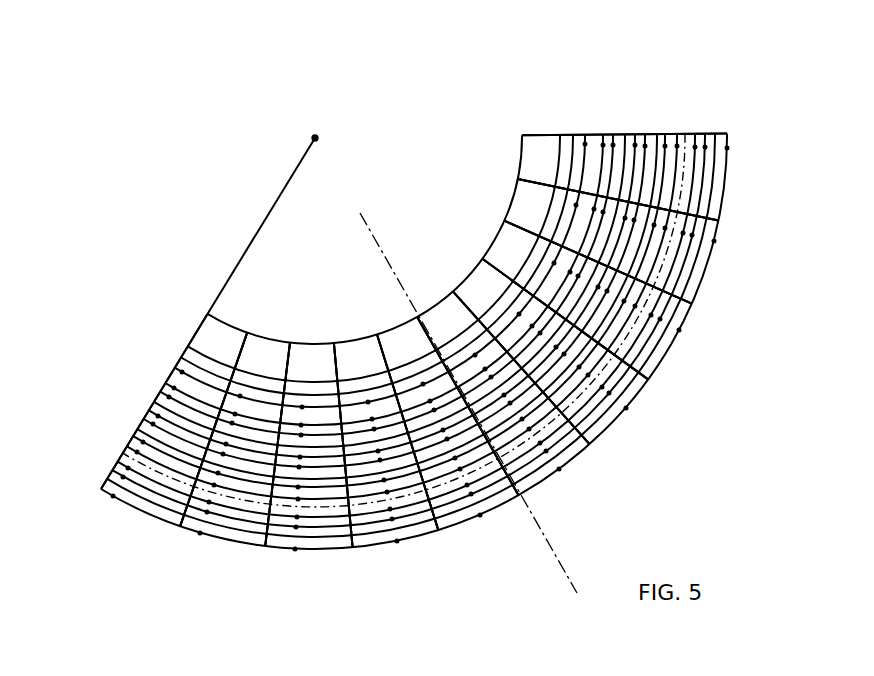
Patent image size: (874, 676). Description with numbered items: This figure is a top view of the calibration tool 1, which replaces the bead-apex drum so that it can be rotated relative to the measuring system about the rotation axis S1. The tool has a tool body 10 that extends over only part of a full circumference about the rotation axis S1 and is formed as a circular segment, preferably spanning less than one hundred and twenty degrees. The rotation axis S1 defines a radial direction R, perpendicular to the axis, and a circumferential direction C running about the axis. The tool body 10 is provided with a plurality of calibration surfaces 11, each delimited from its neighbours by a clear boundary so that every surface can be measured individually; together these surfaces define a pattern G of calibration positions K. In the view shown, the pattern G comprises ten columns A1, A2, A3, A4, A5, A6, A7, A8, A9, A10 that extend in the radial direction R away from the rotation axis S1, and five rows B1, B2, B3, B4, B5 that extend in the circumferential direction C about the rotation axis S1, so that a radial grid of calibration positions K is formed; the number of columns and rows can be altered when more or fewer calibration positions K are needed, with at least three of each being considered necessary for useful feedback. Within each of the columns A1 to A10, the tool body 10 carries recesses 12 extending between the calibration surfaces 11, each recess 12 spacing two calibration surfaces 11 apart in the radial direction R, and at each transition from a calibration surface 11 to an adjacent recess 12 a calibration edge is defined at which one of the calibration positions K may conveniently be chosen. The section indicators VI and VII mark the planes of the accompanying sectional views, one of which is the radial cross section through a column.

The calibration tool 1 is at (214, 161).
The tool body 10 is at (260, 248).
The calibration surfaces 11 is at (357, 473).
The recesses 12 is at (578, 133).
The rotation axis S1 is at (318, 124).
The radial direction R is at (317, 140).
The circumferential direction C is at (88, 442).
The calibration positions K is at (130, 482).
The pattern G is at (530, 133).
The first row B1 is at (595, 133).
The second row B2 is at (623, 133).
The third row B3 is at (657, 133).
The fourth row B4 is at (690, 133).
The fifth row B5 is at (727, 133).
The first column A1 is at (145, 513).
The second column A2 is at (193, 533).
The third column A3 is at (343, 552).
The fourth column A4 is at (412, 545).
The fifth column A5 is at (496, 505).
The sixth column A6 is at (573, 458).
The seventh column A7 is at (637, 398).
The eighth column A8 is at (670, 348).
The ninth column A9 is at (703, 278).
The tenth column A10 is at (728, 158).
The section line VI is at (354, 234).
The section line VII is at (680, 256).